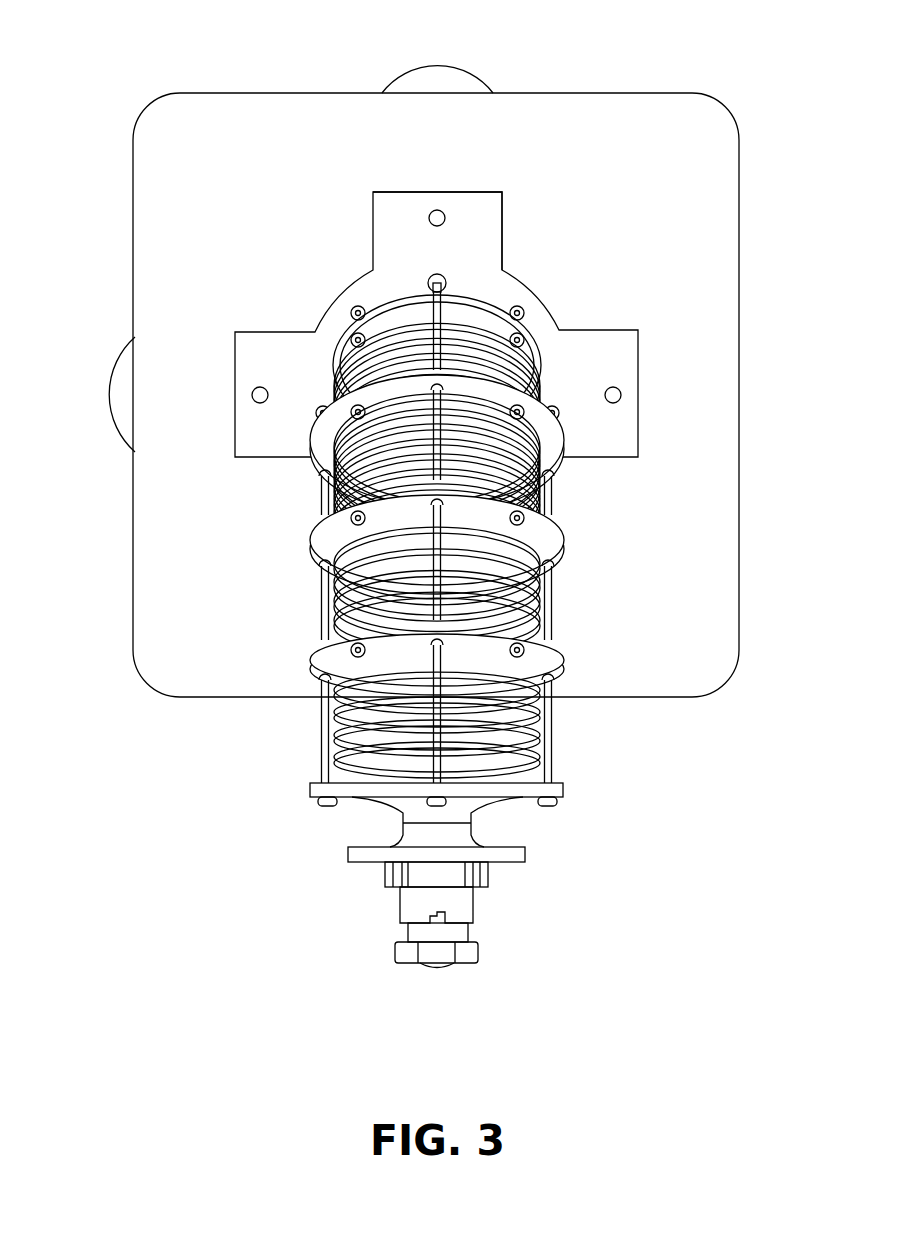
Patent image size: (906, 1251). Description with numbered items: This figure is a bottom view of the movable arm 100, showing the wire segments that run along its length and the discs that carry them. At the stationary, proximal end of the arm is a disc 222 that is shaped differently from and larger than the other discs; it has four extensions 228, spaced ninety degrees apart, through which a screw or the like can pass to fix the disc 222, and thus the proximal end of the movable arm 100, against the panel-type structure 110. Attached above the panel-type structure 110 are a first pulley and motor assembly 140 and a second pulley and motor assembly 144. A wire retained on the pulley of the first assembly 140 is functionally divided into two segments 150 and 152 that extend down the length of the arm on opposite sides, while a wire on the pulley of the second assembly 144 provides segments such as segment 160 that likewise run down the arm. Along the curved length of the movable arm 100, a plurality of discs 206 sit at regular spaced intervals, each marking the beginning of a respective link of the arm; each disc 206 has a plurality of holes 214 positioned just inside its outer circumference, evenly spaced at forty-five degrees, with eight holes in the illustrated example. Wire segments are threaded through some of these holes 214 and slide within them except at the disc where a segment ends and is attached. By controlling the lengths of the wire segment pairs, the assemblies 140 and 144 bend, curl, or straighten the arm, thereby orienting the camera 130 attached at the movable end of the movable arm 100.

The movable arm 100 is at (263, 780).
The panel-type structure 110 is at (732, 210).
The camera 130 is at (463, 903).
The first pulley and motor assembly 140 is at (433, 80).
The second pulley and motor assembly 144 is at (122, 388).
The wire segment 150 is at (553, 735).
The wire segment 152 is at (322, 735).
The wire segment 160 is at (440, 326).
The disc 206 is at (437, 444).
The holes 214 is at (486, 536).
The disc 222 is at (466, 192).
The extensions 228 is at (397, 224).